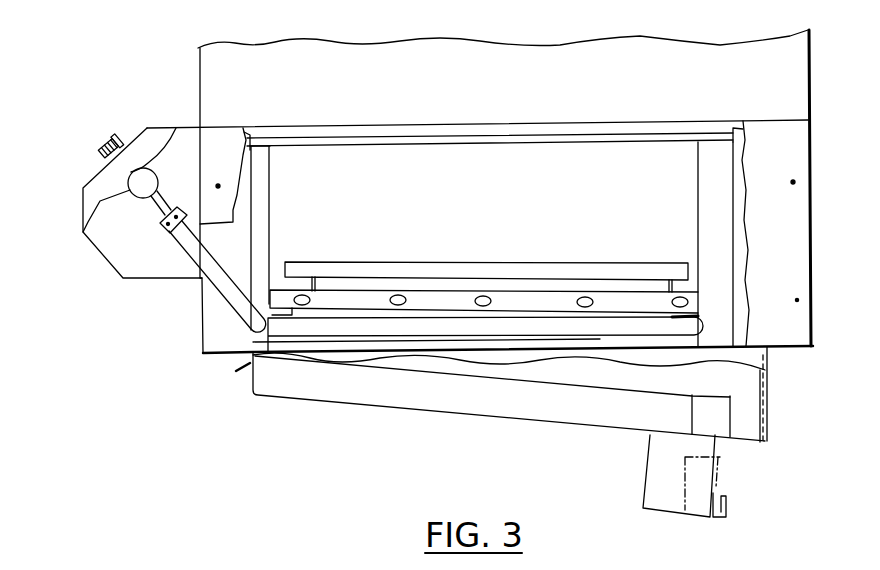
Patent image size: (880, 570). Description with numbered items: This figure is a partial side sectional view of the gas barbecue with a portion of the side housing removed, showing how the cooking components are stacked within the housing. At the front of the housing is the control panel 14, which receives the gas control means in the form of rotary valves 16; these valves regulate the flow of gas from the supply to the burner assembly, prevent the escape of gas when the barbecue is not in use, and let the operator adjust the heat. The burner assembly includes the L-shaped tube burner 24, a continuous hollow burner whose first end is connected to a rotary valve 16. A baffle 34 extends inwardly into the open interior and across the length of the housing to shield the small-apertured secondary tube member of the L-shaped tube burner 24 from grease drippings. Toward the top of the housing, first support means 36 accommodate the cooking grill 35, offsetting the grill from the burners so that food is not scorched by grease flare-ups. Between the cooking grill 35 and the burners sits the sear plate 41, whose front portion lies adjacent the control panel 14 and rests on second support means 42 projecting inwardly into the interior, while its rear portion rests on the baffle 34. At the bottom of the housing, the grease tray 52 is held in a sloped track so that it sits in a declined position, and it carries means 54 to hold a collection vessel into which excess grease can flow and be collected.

The control panel 14 is at (91, 194).
The rotary valve 16 is at (111, 139).
The L-shaped tube burner 24 is at (315, 332).
The baffle 34 is at (680, 316).
The cooking grill 35 is at (527, 142).
The first support means 36 is at (261, 152).
The sear plate 41 is at (277, 294).
The second support means 42 is at (253, 336).
The grease tray 52 is at (352, 392).
The means to hold a collection vessel 54 is at (663, 495).